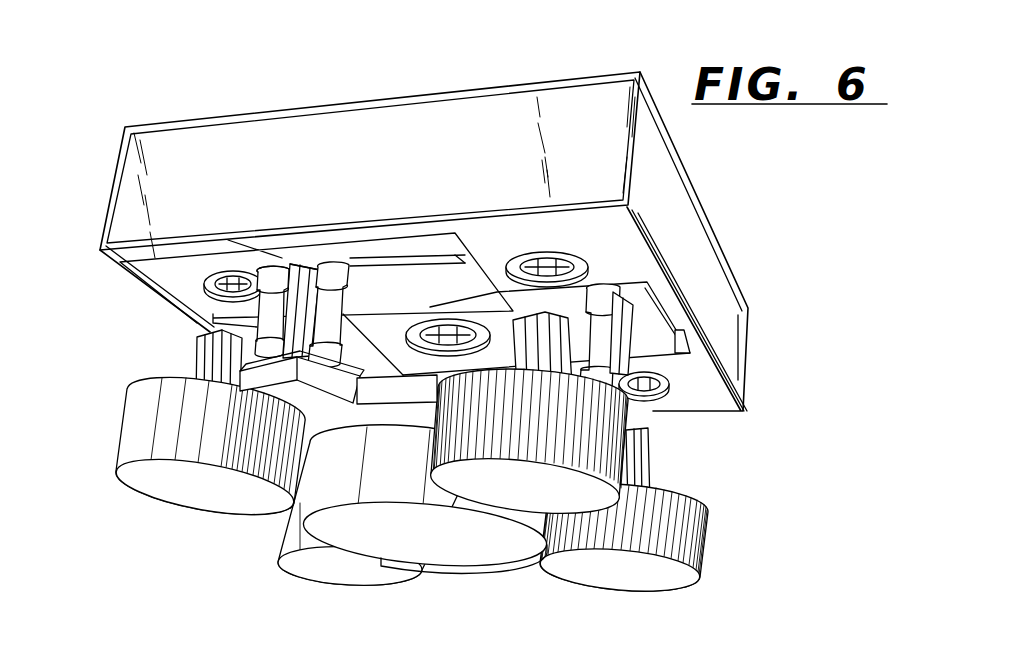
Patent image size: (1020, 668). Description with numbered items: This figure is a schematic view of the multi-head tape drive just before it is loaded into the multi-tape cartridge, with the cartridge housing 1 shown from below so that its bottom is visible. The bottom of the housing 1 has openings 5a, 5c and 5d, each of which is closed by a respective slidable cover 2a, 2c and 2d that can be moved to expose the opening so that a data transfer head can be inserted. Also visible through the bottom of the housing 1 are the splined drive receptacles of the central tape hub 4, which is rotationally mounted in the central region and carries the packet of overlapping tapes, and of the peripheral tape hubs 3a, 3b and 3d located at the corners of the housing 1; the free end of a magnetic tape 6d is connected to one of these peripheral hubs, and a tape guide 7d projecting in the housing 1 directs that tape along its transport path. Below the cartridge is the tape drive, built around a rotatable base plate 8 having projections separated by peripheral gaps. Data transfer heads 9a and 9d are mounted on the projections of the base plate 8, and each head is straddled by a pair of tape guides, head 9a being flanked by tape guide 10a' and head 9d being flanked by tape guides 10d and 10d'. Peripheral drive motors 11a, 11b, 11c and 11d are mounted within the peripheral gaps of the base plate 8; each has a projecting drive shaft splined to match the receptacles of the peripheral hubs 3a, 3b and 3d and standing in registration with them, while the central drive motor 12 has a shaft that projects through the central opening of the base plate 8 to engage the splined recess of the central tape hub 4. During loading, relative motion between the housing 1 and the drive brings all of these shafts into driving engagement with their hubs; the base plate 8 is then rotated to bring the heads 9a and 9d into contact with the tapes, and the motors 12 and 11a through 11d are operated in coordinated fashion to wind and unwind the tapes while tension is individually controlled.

The housing 1 is at (565, 97).
The slidable cover 2a is at (507, 300).
The slidable cover 2c is at (389, 359).
The slidable cover 2d is at (463, 256).
The peripheral tape hub 3a is at (540, 252).
The peripheral tape hub 3b is at (618, 390).
The peripheral tape hub 3d is at (218, 292).
The central tape hub 4 is at (417, 332).
The opening 5a is at (678, 345).
The opening 5c is at (240, 327).
The opening 5d is at (307, 258).
The magnetic tape 6d is at (403, 247).
The tape guide 7d is at (272, 268).
The base plate 8 is at (313, 403).
The data transfer head 9a is at (618, 343).
The data transfer head 9d is at (300, 266).
The tape guide 10a' is at (582, 265).
The tape guide 10d is at (359, 315).
The tape guide 10d' is at (170, 311).
The peripheral drive motor 11a is at (577, 447).
The peripheral drive motor 11b is at (673, 530).
The peripheral drive motor 11c is at (330, 563).
The peripheral drive motor 11d is at (207, 433).
The central drive motor 12 is at (443, 542).